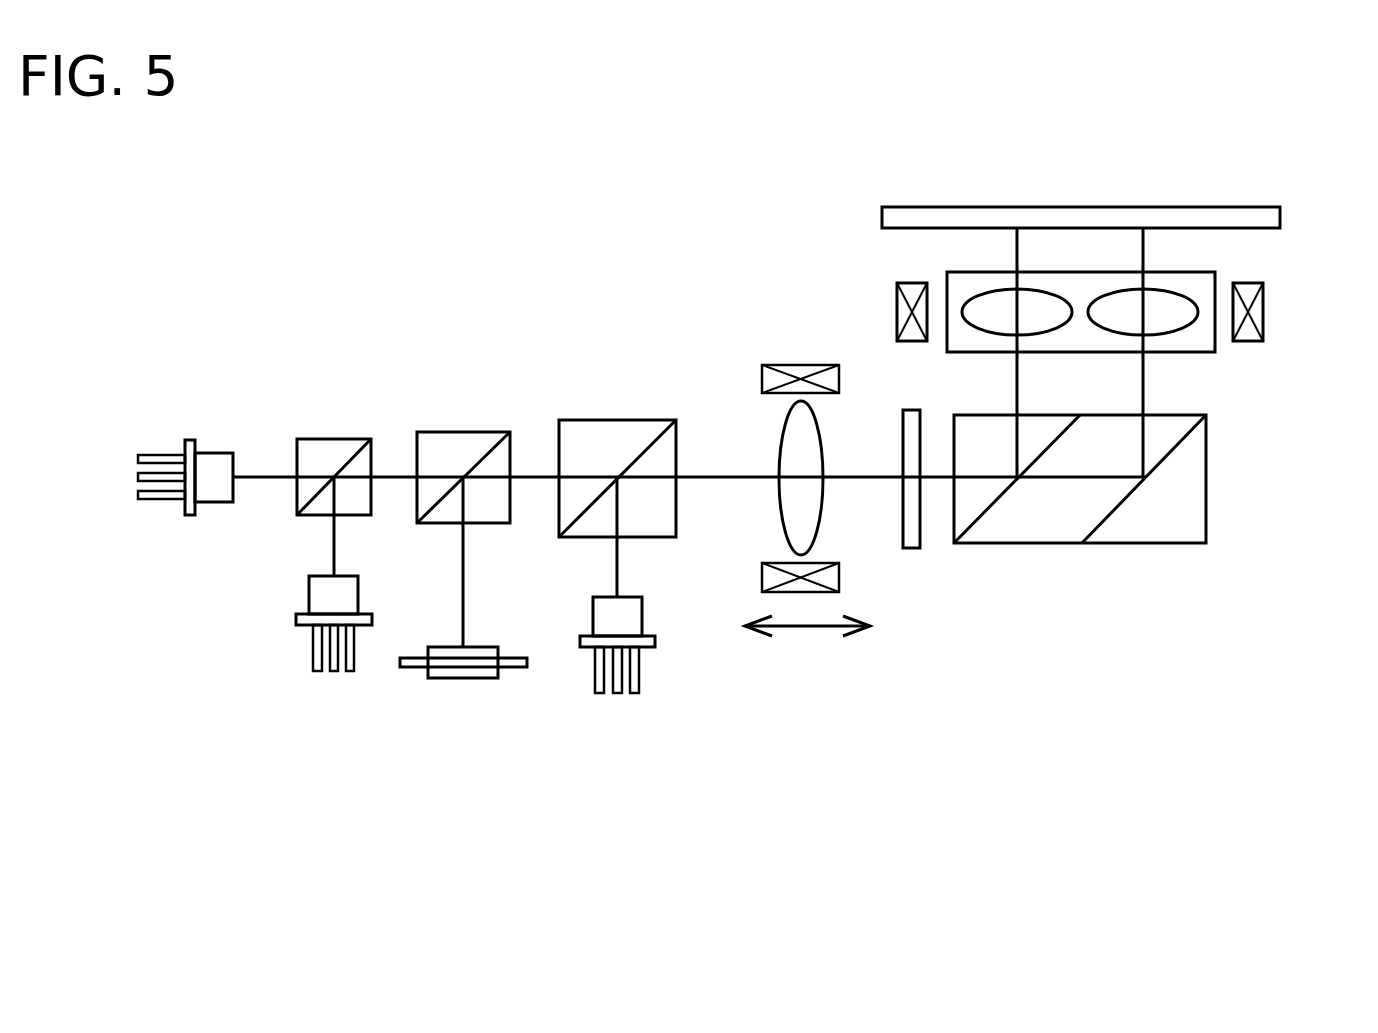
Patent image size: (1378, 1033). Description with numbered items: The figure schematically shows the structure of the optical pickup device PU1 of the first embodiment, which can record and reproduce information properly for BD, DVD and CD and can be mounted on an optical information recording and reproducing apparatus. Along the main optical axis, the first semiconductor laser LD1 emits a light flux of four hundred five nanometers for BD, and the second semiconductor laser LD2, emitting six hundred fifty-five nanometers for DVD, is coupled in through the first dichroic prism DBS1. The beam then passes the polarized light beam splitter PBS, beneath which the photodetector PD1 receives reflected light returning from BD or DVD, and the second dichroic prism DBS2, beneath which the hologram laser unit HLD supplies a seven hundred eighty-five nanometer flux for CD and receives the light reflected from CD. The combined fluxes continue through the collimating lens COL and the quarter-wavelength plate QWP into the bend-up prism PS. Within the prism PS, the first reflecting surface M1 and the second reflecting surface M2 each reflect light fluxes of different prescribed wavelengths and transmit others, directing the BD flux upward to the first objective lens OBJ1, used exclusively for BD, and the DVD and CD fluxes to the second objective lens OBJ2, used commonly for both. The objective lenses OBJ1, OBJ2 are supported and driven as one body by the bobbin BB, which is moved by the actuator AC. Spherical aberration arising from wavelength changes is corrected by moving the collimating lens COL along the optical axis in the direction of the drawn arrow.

The optical pickup device PU1 is at (522, 187).
The first semiconductor laser LD1 is at (210, 453).
The second semiconductor laser LD2 is at (296, 625).
The first dichroic prism DBS1 is at (334, 439).
The second dichroic prism DBS2 is at (614, 420).
The polarized light beam splitter PBS is at (460, 432).
The photodetector PD1 is at (515, 667).
The hologram laser unit HLD is at (590, 647).
The collimating lens COL is at (822, 450).
The λ/4 wavelength plate QWP is at (912, 410).
The bend-up prism PS is at (1206, 530).
The first reflecting surface M1 is at (980, 520).
The second reflecting surface M2 is at (1108, 520).
The bobbin BB is at (1078, 352).
The first objective lens OBJ1 is at (1052, 295).
The second objective lens OBJ2 is at (1172, 295).
The actuator AC is at (1265, 298).